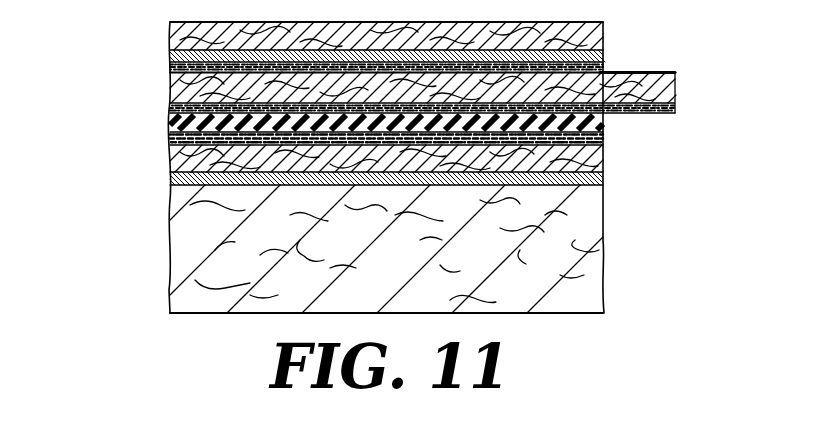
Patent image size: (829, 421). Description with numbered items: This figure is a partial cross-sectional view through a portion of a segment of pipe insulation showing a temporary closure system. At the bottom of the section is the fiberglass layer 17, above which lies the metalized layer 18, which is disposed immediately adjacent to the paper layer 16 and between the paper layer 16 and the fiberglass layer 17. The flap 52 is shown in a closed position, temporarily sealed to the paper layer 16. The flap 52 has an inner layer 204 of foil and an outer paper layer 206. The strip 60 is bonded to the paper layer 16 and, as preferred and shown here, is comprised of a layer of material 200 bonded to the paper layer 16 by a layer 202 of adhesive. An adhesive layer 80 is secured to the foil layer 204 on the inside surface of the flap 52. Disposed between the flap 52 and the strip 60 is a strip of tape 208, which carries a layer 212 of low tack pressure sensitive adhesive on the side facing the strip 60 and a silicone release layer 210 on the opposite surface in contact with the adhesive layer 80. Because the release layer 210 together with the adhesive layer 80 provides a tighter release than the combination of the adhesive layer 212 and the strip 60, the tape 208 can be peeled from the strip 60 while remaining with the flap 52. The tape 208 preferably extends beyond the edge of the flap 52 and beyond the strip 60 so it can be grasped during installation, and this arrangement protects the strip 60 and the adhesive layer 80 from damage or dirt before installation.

The flap 52 is at (611, 55).
The outer paper layer 206 is at (168, 38).
The inner layer of foil 204 is at (168, 58).
The adhesive layer 80 is at (603, 63).
The release layer 210 is at (678, 72).
The strip of tape 208 is at (677, 90).
The layer of pressure sensitive adhesive 212 is at (677, 107).
The strip 60 is at (605, 113).
The layer of material 200 is at (168, 124).
The layer of adhesive 202 is at (168, 140).
The paper layer 16 is at (603, 160).
The metalized layer 18 is at (603, 181).
The fiberglass layer 17 is at (603, 232).